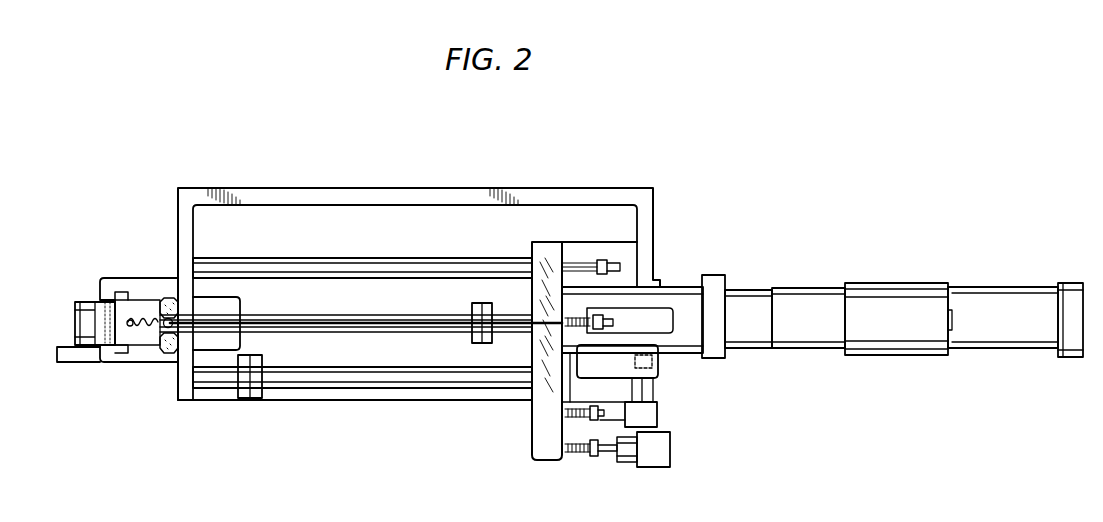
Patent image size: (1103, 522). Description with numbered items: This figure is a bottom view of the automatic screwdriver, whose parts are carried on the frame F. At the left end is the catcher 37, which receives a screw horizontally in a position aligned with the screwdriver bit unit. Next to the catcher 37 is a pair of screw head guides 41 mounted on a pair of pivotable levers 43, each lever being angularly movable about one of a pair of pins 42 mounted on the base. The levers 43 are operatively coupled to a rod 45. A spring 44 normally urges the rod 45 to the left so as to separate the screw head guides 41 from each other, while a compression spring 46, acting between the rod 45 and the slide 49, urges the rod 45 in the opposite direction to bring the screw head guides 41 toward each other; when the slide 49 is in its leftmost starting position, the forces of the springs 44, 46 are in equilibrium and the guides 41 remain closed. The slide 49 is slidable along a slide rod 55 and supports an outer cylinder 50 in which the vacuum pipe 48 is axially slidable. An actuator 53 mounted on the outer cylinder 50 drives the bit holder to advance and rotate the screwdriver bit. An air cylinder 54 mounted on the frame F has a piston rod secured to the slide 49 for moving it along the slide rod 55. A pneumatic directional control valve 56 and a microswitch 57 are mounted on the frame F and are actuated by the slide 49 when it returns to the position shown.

The frame F is at (527, 194).
The catcher 37 is at (90, 291).
The screw head guides 41 is at (118, 292).
The pins 42 is at (170, 298).
The pivotable levers 43 is at (140, 298).
The spring 44 is at (148, 332).
The rod 45 is at (384, 325).
The compression spring 46 is at (575, 316).
The vacuum pipe 48 is at (351, 318).
The slide 49 is at (545, 458).
The outer cylinder 50 is at (683, 300).
The actuator 53 is at (868, 300).
The air cylinder 54 is at (988, 300).
The slide rod 55 is at (350, 268).
The pneumatic directional control valve 56 is at (664, 411).
The microswitch 57 is at (665, 452).